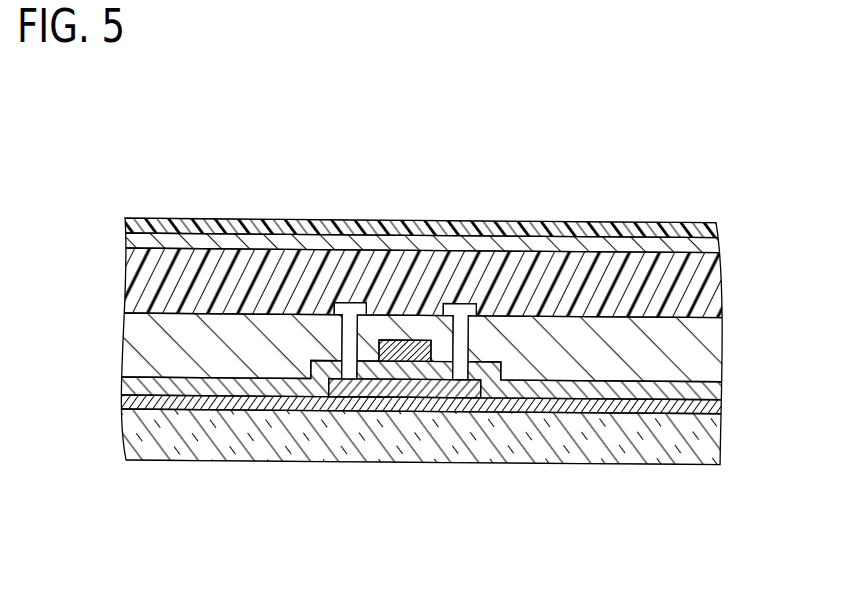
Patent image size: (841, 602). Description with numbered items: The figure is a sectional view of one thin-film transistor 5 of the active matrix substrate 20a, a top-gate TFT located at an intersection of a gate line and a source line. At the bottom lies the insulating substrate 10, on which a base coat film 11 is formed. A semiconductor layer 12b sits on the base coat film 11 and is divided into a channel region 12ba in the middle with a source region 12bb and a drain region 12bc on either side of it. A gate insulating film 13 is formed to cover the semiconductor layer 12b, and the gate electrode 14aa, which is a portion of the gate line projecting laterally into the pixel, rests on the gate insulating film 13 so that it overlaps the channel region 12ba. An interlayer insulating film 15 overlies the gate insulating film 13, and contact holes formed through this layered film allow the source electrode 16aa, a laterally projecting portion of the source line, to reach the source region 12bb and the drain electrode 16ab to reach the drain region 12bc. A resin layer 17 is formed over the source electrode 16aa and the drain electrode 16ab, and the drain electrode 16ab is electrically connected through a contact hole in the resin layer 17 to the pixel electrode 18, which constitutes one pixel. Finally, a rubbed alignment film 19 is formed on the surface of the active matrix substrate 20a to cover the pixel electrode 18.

The active matrix substrate 20a is at (193, 192).
The thin-film transistor 5 is at (357, 279).
The insulating substrate 10 is at (710, 449).
The base coat film 11 is at (712, 409).
The semiconductor layer 12b is at (510, 515).
The source region 12bb is at (346, 382).
The channel region 12ba is at (401, 392).
The drain region 12bc is at (461, 393).
The gate insulating film 13 is at (710, 395).
The gate electrode 14aa is at (411, 338).
The interlayer insulating film 15 is at (710, 352).
The source electrode 16aa is at (340, 304).
The drain electrode 16ab is at (462, 302).
The resin layer 17 is at (718, 285).
The pixel electrode 18 is at (722, 243).
The alignment film 19 is at (718, 227).